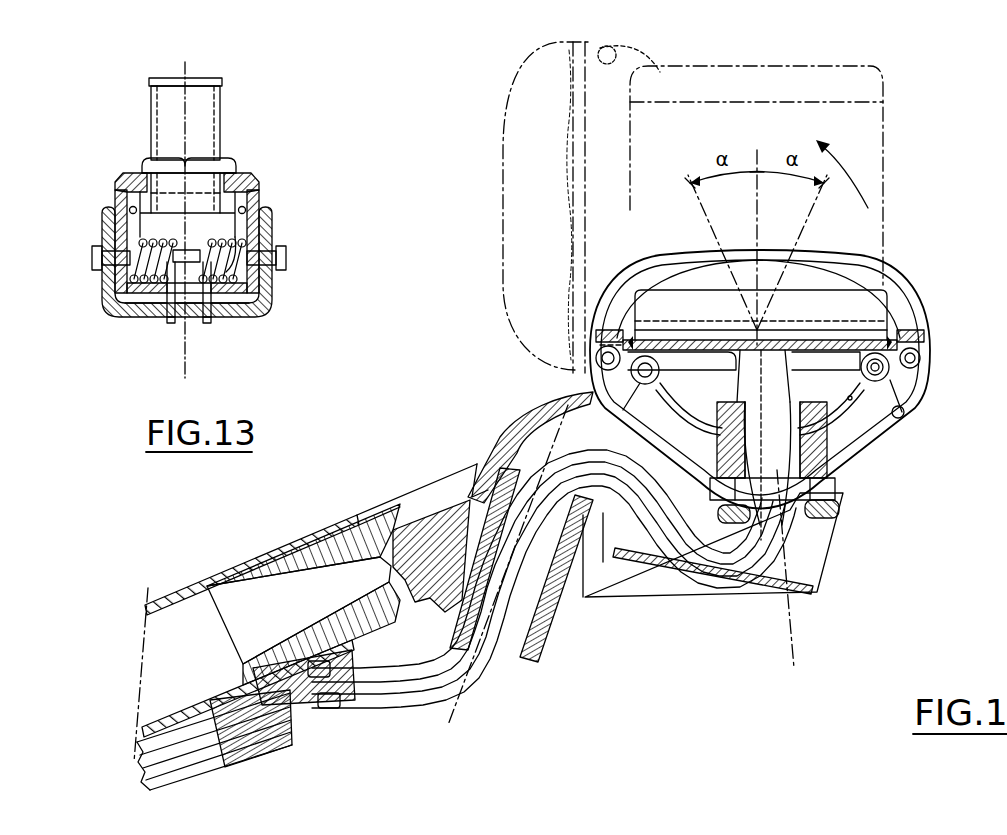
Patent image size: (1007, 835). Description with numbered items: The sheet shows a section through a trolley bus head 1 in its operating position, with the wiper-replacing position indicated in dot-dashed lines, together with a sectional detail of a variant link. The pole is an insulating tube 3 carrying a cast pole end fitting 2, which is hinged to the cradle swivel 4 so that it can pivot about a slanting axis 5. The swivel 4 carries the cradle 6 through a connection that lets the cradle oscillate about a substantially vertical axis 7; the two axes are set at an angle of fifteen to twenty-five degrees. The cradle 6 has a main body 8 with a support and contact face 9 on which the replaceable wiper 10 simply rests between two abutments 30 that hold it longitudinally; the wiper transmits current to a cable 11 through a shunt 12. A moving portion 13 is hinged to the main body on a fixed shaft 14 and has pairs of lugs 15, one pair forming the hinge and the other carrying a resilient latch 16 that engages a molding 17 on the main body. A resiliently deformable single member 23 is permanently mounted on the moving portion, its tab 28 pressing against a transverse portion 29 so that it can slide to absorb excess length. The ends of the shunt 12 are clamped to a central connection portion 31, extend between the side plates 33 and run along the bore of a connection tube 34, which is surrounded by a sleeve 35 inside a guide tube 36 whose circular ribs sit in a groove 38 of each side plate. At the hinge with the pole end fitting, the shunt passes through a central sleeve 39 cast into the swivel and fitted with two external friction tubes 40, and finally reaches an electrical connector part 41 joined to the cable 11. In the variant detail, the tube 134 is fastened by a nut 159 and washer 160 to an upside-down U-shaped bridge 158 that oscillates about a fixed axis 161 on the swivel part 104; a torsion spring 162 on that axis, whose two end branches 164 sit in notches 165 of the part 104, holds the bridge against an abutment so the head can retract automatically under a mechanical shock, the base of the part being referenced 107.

In FIG. 1, the head 1 is at (455, 410).
In FIG. 1, the pole end fitting 2 is at (423, 537).
In FIG. 1, the insulating tube 3 is at (307, 542).
In FIG. 1, the cradle swivel 4 is at (817, 564).
In FIG. 1, the slanting axis 5 is at (573, 442).
In FIG. 1, the cradle 6 is at (900, 443).
In FIG. 1, the substantially vertical axis 7 is at (797, 630).
In FIG. 1, the main body 8 is at (840, 460).
In FIG. 1, the support and contact face 9 is at (820, 316).
In FIG. 1, the replaceable wiper 10 is at (890, 88).
In FIG. 1, the cable 11 is at (195, 750).
In FIG. 1, the shunt 12 is at (388, 678).
In FIG. 1, the moving portion 13 is at (513, 183).
In FIG. 1, the fixed shaft 14 is at (594, 358).
In FIG. 1, the lugs 15 is at (925, 350).
In FIG. 1, the resilient latch 16 is at (906, 406).
In FIG. 1, the molding 17 is at (918, 377).
In FIG. 1, the single member 23 is at (582, 183).
In FIG. 1, the tab 28 is at (922, 312).
In FIG. 1, the transverse portion 29 is at (936, 322).
In FIG. 1, the abutments 30 is at (600, 320).
In FIG. 1, the central connection portion 31 is at (744, 374).
In FIG. 1, the side plates 33 is at (860, 445).
In FIG. 1, the connection tube 34 is at (718, 438).
In FIG. 1, the sleeve 35 is at (716, 428).
In FIG. 1, the guide tube 36 is at (718, 422).
In FIG. 1, the groove 38 is at (849, 400).
In FIG. 1, the central sleeve 39 is at (500, 665).
In FIG. 1, the external friction tubes 40 is at (562, 620).
In FIG. 1, the electrical connector part 41 is at (312, 706).
In FIG. 13, the swivel part 104 is at (110, 300).
In FIG. 13, the base plate 107 is at (192, 360).
In FIG. 13, the tube 134 is at (152, 108).
In FIG. 13, the upside-down U-shaped bridge 158 is at (118, 196).
In FIG. 13, the nut 159 is at (250, 198).
In FIG. 13, the washer 160 is at (140, 166).
In FIG. 13, the fixed axis 161 is at (258, 238).
In FIG. 13, the spring 162 is at (112, 236).
In FIG. 13, the end branches 164 is at (168, 326).
In FIG. 13, the notches 165 is at (150, 312).